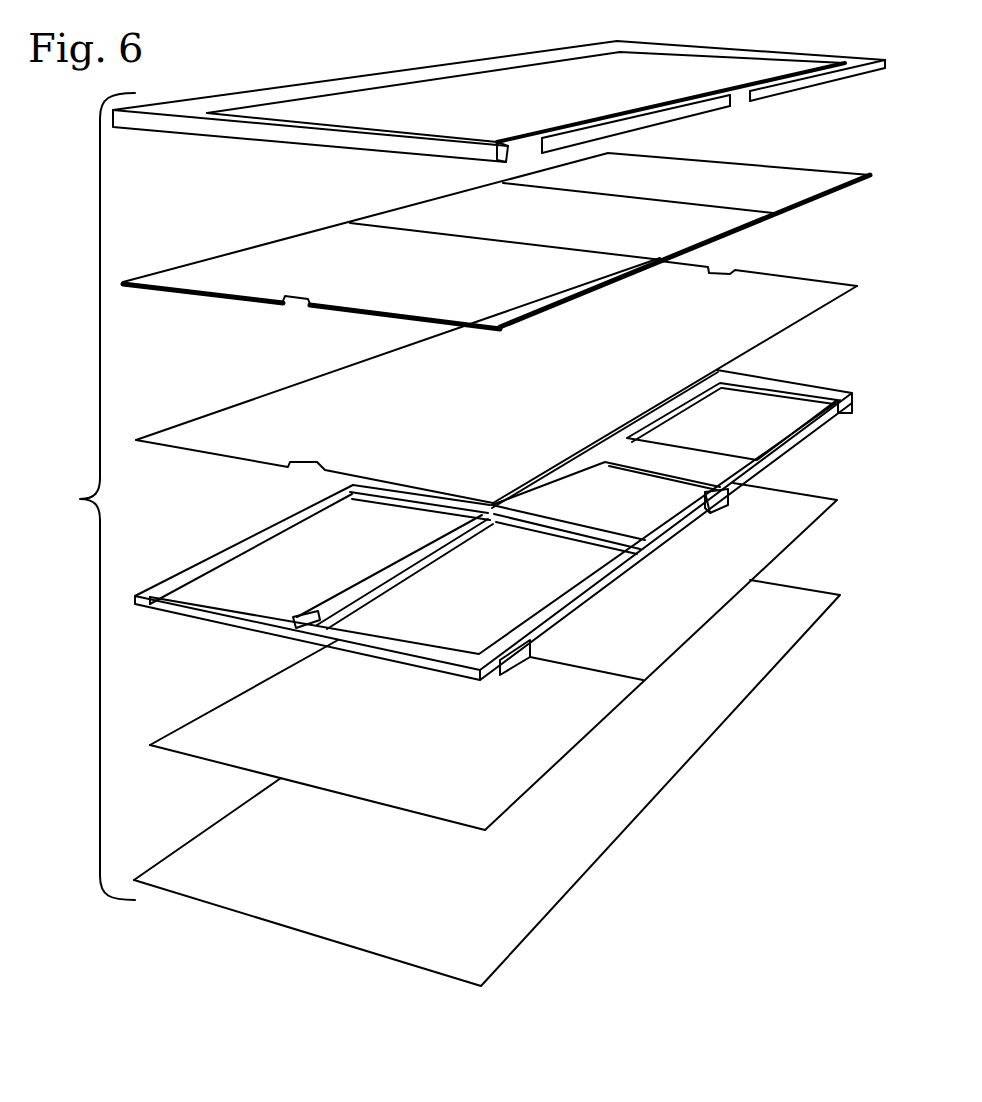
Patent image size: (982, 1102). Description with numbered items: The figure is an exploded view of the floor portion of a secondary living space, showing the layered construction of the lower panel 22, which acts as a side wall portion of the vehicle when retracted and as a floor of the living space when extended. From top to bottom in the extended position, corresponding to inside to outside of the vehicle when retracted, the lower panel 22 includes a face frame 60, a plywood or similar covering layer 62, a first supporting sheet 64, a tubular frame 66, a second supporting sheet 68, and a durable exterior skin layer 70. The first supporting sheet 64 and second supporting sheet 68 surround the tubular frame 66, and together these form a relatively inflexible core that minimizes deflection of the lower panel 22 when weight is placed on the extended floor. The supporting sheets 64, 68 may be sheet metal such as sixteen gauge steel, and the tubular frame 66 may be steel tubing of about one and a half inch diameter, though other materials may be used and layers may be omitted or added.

The lower panel 22 is at (80, 499).
The face frame 60 is at (848, 62).
The covering layer 62 is at (832, 178).
The first supporting sheet 64 is at (815, 290).
The tubular frame 66 is at (830, 392).
The second supporting sheet 68 is at (817, 503).
The exterior skin layer 70 is at (820, 600).